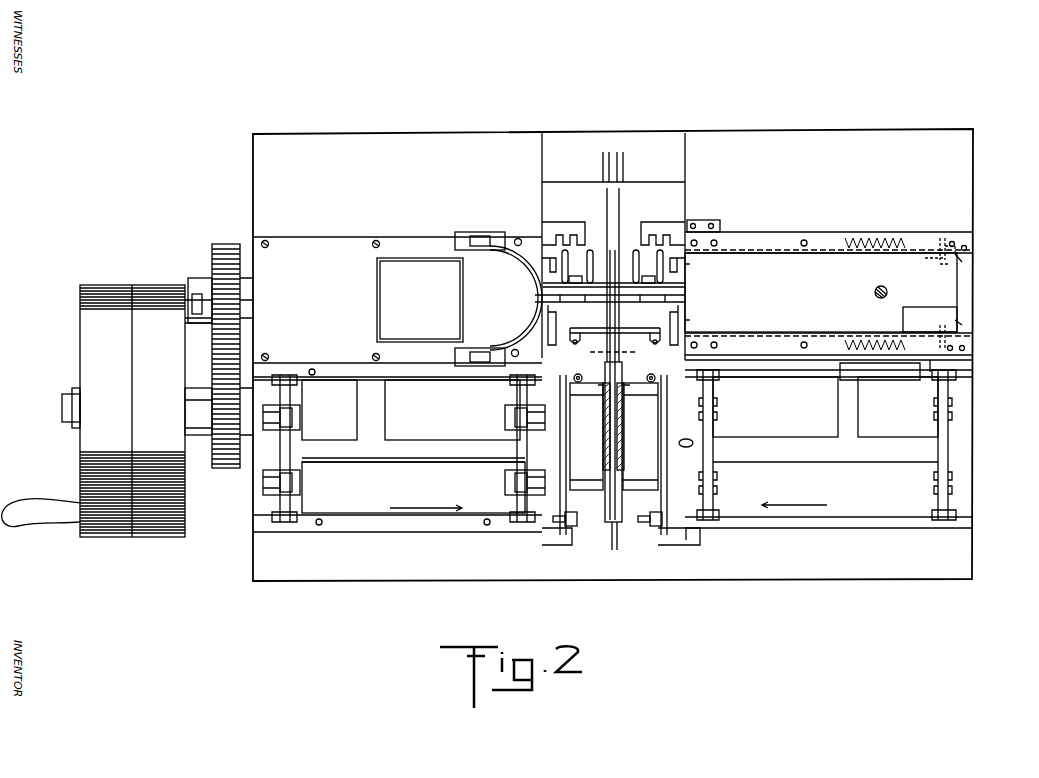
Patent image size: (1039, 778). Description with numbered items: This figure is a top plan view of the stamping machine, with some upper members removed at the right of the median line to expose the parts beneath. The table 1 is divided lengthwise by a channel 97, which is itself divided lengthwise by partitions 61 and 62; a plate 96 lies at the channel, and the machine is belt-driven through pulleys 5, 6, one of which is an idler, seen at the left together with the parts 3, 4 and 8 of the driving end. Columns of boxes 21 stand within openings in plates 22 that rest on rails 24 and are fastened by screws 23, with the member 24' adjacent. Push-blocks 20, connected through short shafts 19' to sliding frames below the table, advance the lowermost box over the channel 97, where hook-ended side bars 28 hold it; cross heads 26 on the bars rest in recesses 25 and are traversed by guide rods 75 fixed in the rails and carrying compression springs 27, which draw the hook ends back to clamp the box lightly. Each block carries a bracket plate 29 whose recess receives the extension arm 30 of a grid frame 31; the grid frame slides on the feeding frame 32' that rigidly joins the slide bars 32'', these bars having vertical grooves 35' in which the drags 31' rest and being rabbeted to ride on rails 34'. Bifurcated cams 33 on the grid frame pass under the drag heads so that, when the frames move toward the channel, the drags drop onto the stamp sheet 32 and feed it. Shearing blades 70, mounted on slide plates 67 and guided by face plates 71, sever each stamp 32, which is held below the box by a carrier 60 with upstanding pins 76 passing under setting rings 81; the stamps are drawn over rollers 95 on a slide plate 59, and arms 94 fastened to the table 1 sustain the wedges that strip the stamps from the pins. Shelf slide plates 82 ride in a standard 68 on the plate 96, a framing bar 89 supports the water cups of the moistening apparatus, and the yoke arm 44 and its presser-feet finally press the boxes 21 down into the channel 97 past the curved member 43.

The table 1 is at (800, 148).
The knob 3 is at (62, 410).
The hub 4 is at (197, 290).
The pulley 5 is at (155, 300).
The pulley 6 is at (102, 300).
The gear 8 is at (232, 322).
The short shaft 19' is at (902, 291).
The push-block 20 is at (940, 300).
The box 21 is at (412, 268).
The plate 22 is at (300, 246).
The screw 23 is at (261, 242).
The rail 24 is at (845, 285).
The rail 24' is at (829, 228).
The recess 25 is at (932, 260).
The cross head 26 is at (950, 256).
The spiral compression spring 27 is at (892, 240).
The side bar 28 is at (690, 270).
The bracket plate 29 is at (932, 362).
The extension arm 30 is at (838, 402).
The grid frame 31 is at (620, 450).
The drag 31' is at (325, 444).
The stamp 32 is at (613, 465).
The frame 32' is at (413, 487).
The slide bar 32'' is at (642, 448).
The bifurcated cam 33 is at (298, 408).
The rail 34' is at (610, 463).
The vertical groove 35' is at (826, 445).
The curved arm 43 is at (526, 336).
The yoke arm 44 is at (545, 296).
The slide plate 59 is at (641, 182).
The carrier 60 is at (615, 326).
The partition 61 is at (603, 163).
The partition 62 is at (612, 544).
The slide plate 67 is at (604, 442).
The standard 68 is at (606, 508).
The shearing blade 70 is at (658, 460).
The face plate 71 is at (560, 532).
The guide rod 75 is at (930, 246).
The pin 76 is at (619, 325).
The setting ring 81 is at (678, 404).
The slide plate 82 is at (602, 390).
The framing bar 89 is at (598, 350).
The arm 94 is at (568, 232).
The roller 95 is at (614, 268).
The plate 96 is at (646, 578).
The channel 97 is at (583, 146).